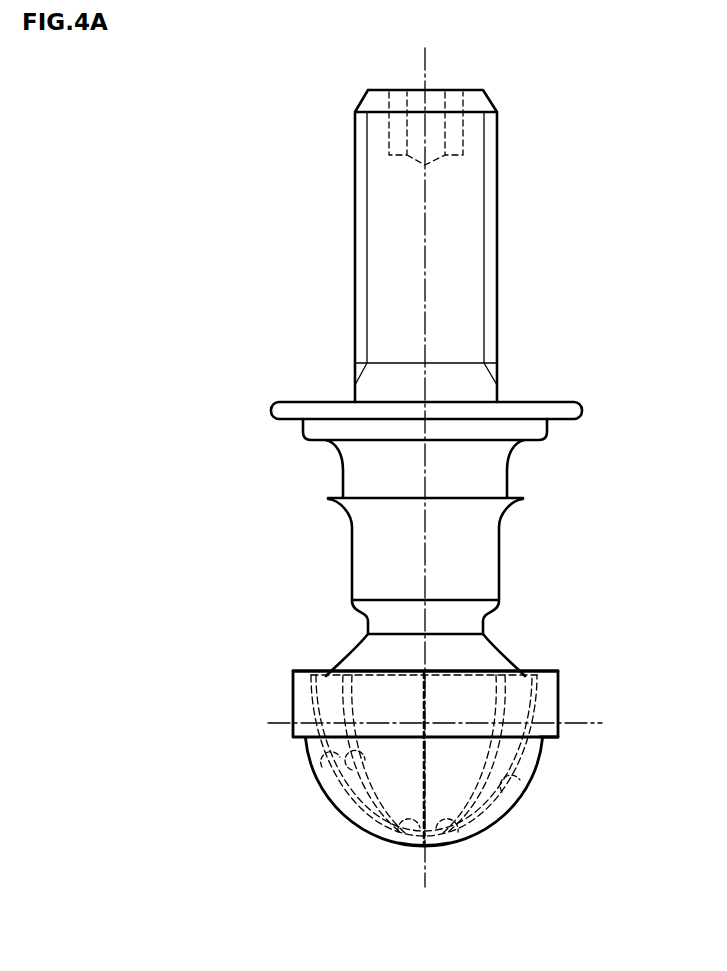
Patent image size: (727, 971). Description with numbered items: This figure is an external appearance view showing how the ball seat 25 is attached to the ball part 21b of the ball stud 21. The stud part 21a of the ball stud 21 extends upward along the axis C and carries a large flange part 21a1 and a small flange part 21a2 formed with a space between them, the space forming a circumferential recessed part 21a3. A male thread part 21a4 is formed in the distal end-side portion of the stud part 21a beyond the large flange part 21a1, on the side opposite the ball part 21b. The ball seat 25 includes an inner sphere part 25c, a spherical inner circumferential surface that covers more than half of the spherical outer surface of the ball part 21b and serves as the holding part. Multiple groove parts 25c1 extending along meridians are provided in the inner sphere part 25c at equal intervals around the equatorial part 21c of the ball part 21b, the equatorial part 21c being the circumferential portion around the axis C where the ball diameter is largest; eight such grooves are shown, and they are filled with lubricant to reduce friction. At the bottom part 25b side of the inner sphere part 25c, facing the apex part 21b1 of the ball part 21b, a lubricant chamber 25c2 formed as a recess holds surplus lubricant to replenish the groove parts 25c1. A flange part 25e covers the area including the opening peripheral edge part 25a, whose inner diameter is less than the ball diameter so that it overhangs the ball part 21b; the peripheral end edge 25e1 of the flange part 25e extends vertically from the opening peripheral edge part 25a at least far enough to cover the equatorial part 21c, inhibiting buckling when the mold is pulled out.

The axis C is at (425, 70).
The ball stud 21 is at (517, 192).
The stud part 21a is at (235, 97).
The large flange part 21a1 is at (582, 407).
The small flange part 21a2 is at (523, 497).
The circumferential recessed part 21a3 is at (510, 478).
The male thread part 21a4 is at (497, 294).
The ball part 21b is at (337, 647).
The apex part 21b1 is at (467, 820).
The equatorial part 21c is at (587, 721).
The ball seat 25 is at (568, 688).
The opening peripheral edge part 25a is at (540, 672).
The bottom part 25b is at (435, 848).
The inner sphere part 25c is at (532, 787).
The groove parts 25c1 is at (362, 768).
The lubricant chamber 25c2 is at (397, 837).
The flange part 25e is at (303, 705).
The peripheral end edge 25e1 is at (555, 738).